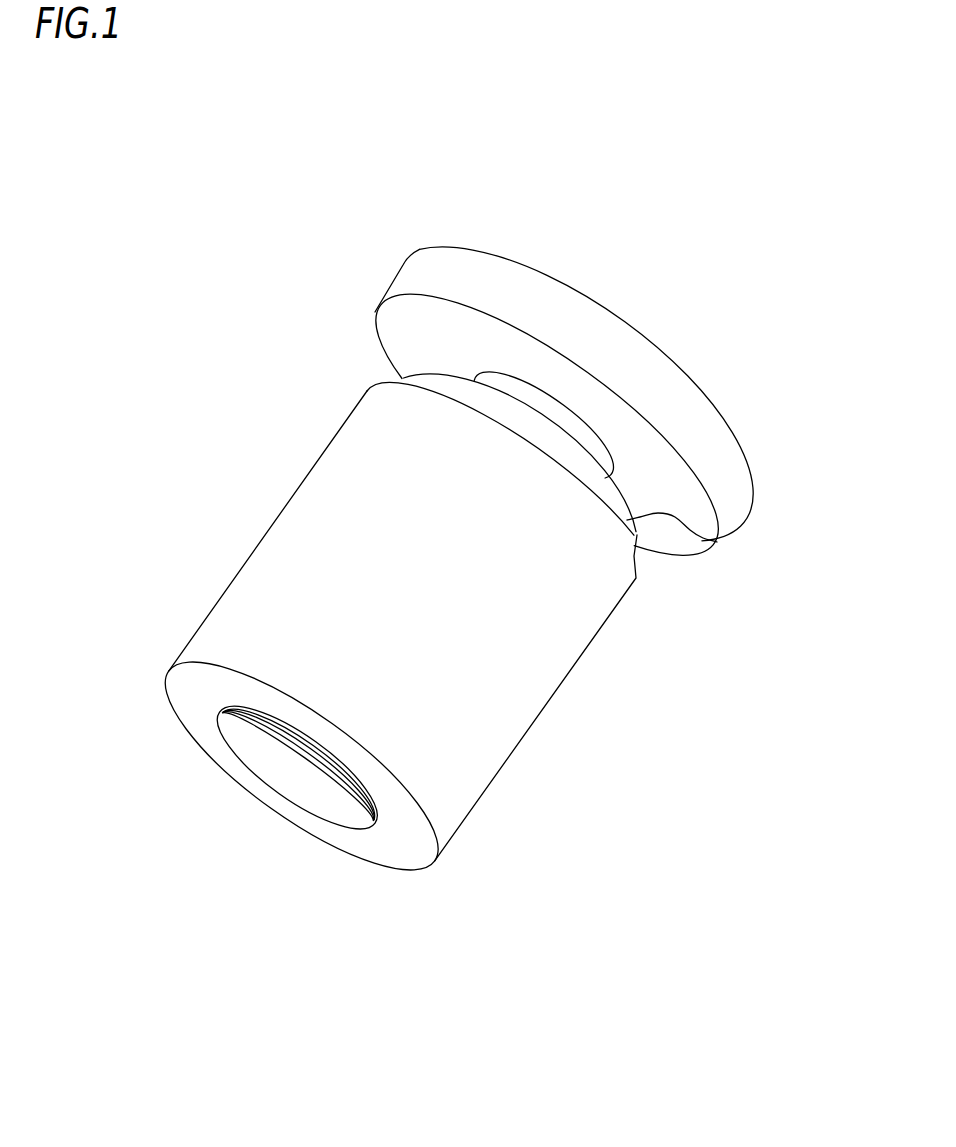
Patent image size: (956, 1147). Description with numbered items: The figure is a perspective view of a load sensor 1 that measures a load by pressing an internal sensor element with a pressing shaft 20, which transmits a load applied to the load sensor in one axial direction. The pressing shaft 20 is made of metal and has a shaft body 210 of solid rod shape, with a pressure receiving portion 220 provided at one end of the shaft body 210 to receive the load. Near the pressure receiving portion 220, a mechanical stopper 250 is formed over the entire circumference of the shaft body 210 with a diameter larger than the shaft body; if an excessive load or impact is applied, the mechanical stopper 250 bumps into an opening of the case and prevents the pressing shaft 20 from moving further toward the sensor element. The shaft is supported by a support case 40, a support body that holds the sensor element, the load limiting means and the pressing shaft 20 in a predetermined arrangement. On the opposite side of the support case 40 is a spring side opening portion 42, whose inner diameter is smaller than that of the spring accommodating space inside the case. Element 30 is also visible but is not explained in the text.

The load sensor 1 is at (492, 534).
The pressing shaft 20 is at (702, 375).
The shaft body 210 is at (503, 387).
The pressure receiving portion 220 is at (583, 320).
The mechanical stopper 250 is at (717, 542).
The threaded hole 30 is at (307, 763).
The support case 40 is at (530, 742).
The spring side opening portion 42 is at (253, 753).